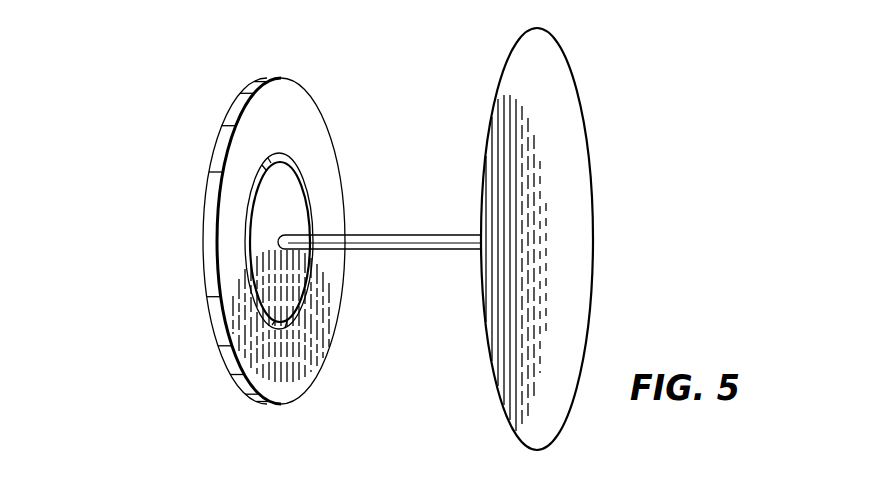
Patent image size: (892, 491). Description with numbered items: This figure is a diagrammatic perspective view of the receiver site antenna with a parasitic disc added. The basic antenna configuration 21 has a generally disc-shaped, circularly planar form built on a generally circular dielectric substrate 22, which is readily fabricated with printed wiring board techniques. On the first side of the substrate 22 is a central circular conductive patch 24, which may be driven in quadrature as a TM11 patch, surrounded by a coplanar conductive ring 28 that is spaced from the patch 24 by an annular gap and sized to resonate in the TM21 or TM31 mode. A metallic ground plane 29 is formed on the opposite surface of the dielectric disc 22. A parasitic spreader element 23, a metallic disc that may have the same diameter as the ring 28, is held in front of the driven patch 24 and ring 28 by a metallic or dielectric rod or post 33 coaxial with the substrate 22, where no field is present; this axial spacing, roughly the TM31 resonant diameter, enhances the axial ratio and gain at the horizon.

The basic antenna configuration 21 is at (291, 76).
The circular dielectric substrate 22 is at (232, 367).
The parasitic spreader element 23 is at (577, 265).
The central circular conductive patch 24 is at (285, 182).
The conductive ring 28 is at (305, 358).
The metallic ground plane 29 is at (224, 113).
The rod or post 33 is at (420, 244).